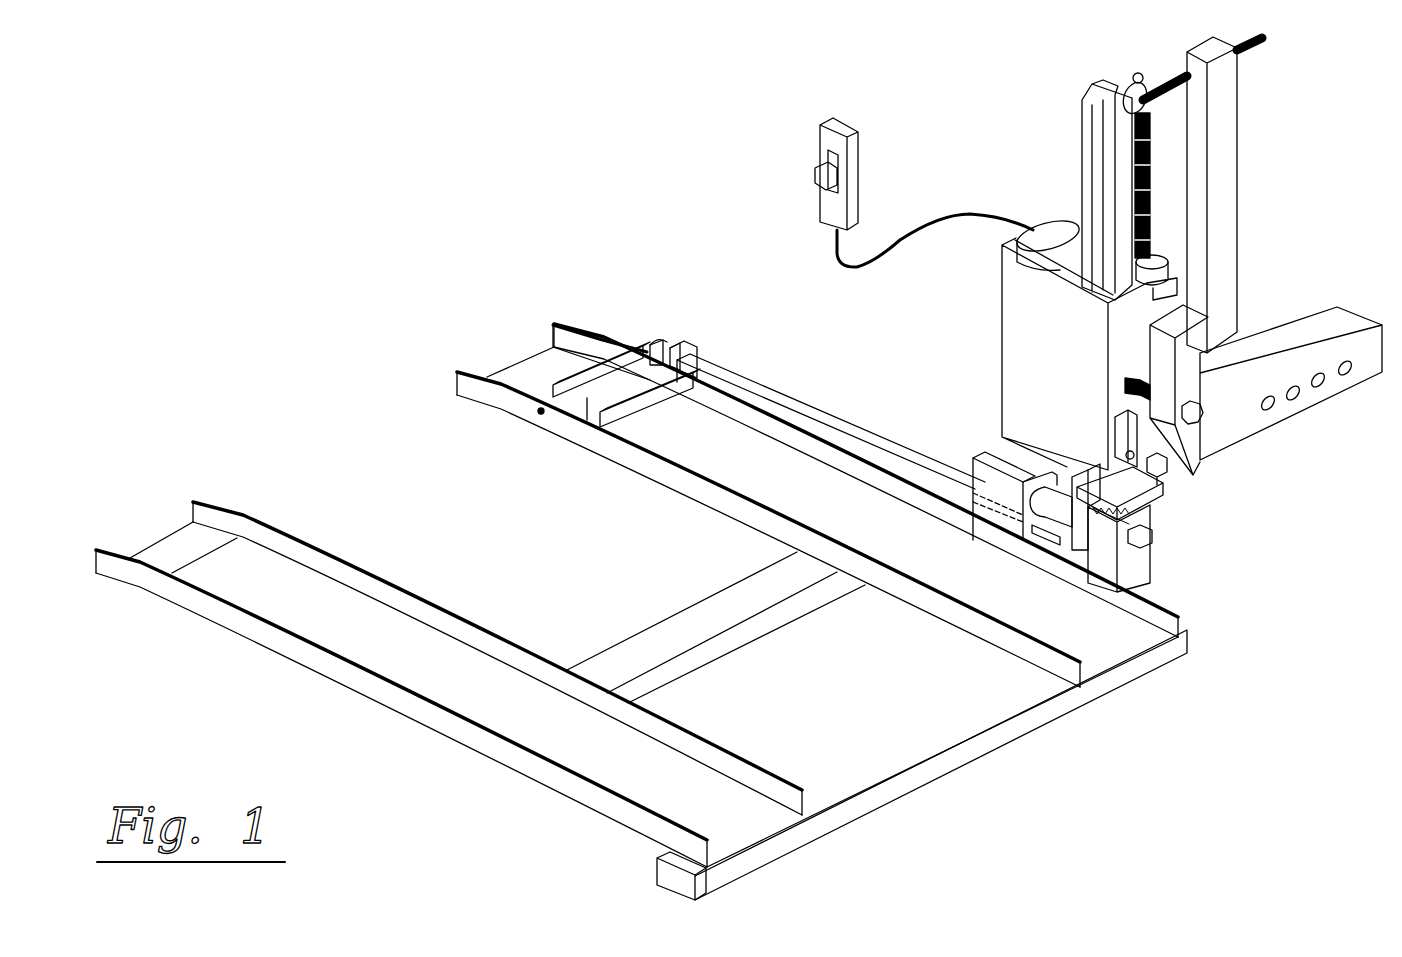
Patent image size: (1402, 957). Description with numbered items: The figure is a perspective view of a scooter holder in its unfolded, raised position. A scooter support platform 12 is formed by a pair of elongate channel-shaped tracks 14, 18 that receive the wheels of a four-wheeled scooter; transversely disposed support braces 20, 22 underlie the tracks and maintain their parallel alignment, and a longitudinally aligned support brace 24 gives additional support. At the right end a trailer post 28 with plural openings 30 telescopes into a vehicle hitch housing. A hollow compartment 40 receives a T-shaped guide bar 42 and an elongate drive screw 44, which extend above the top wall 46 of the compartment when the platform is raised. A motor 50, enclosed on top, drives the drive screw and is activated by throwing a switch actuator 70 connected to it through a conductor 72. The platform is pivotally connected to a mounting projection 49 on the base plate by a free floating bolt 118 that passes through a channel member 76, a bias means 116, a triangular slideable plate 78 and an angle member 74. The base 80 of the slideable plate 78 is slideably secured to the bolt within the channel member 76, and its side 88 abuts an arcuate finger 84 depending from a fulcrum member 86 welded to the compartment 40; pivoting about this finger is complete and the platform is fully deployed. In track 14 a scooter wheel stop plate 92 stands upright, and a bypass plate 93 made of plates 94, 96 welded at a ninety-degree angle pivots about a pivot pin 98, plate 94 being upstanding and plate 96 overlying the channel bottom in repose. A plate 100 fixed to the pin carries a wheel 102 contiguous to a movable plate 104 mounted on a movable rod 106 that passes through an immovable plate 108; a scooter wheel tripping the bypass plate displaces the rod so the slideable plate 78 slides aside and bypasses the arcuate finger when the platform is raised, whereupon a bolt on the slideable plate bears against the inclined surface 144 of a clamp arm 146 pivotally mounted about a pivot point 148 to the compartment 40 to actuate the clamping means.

The scooter support platform 12 is at (1010, 742).
The channel-shaped track 14 is at (960, 614).
The channel-shaped track 18 is at (430, 610).
The transversely disposed support brace 20 is at (915, 790).
The transversely disposed support brace 22 is at (713, 600).
The longitudinally aligned support brace 24 is at (550, 805).
The trailer post 28 is at (1340, 318).
The openings 30 is at (1318, 385).
The compartment 40 is at (1005, 297).
The T-shaped guide bar 42 is at (1083, 125).
The drive screw 44 is at (1157, 148).
The top wall 46 is at (1150, 265).
The mounting projection 49 is at (1065, 490).
The motor 50 is at (1060, 228).
The switch actuator 70 is at (832, 178).
The conductor 72 is at (965, 213).
The angle member 74 is at (1000, 480).
The channel member 76 is at (1110, 570).
The slideable plate 78 is at (1165, 512).
The base of slideable plate 80 is at (1060, 535).
The arcuate finger 84 is at (1148, 495).
The fulcrum member 86 is at (1120, 420).
The side of slideable plate 88 is at (1100, 480).
The scooter wheel stop plate 92 is at (650, 418).
The bypass plate 93 is at (590, 355).
The plate of bypass plate 94 is at (590, 410).
The plate of bypass plate 96 is at (553, 380).
The pivot pin 98 is at (540, 413).
The plate 100 is at (648, 335).
The wheel 102 is at (655, 340).
The movable plate 104 is at (680, 342).
The movable rod 106 is at (812, 410).
The immovable plate 108 is at (700, 350).
The bias means 116 is at (1070, 540).
The free floating bolt 118 is at (1150, 547).
The inclined surface 144 is at (1195, 467).
The clamp arm 146 is at (1228, 297).
The pivot point 148 is at (1203, 415).